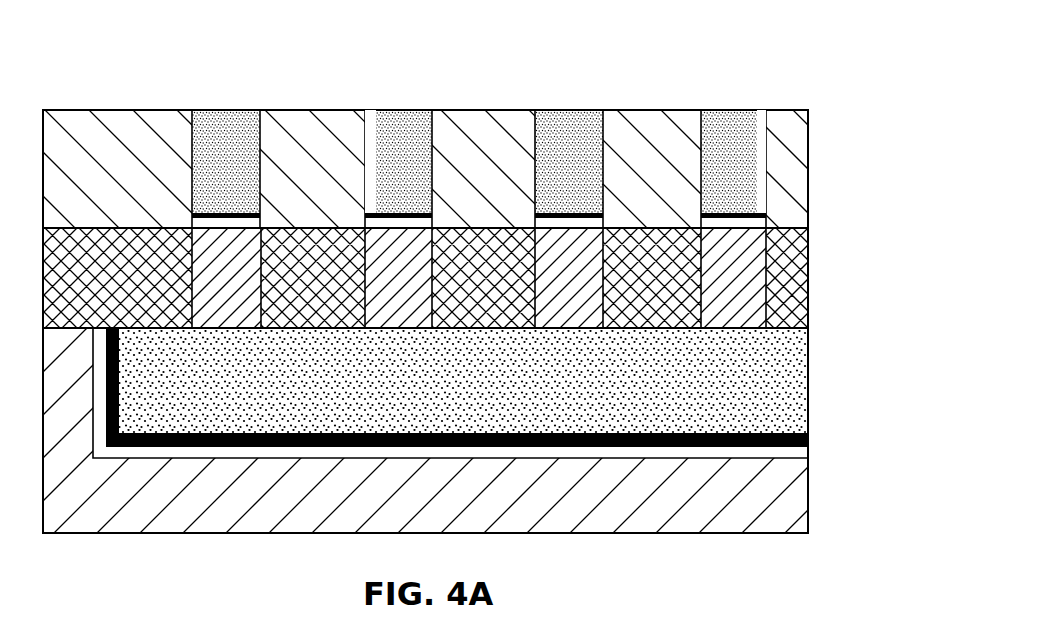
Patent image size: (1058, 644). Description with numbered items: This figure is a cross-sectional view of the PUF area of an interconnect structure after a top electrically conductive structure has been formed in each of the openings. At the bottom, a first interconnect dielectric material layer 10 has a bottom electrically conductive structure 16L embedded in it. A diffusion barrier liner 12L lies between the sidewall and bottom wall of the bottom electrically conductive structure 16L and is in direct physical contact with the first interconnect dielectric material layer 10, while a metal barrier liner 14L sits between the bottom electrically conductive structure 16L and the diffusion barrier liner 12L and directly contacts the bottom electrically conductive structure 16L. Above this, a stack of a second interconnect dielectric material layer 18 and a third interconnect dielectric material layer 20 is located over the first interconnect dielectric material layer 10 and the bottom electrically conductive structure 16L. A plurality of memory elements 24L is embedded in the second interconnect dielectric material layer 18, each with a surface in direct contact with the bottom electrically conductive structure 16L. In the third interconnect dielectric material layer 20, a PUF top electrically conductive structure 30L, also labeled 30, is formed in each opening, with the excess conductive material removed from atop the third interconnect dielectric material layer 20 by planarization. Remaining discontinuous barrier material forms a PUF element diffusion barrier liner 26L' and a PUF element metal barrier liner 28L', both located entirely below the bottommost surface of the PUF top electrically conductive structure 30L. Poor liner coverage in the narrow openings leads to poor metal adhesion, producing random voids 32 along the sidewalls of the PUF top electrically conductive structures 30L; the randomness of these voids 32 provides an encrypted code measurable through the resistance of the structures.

The first interconnect dielectric material layer 10 is at (446, 515).
The diffusion barrier liner 12L is at (797, 453).
The metal barrier liner 14L is at (797, 441).
The bottom electrically conductive structure 16L is at (438, 391).
The second interconnect dielectric material layer 18 is at (103, 288).
The third interconnect dielectric material layer 20 is at (93, 180).
The memory element 24L is at (207, 288).
The PUF element diffusion barrier liner 26L' is at (501, 149).
The PUF element metal barrier liner 28L' is at (480, 147).
The conductive material 30 is at (556, 171).
The PUF top electrically conductive structure 30L is at (207, 173).
The random void 32 is at (371, 118).